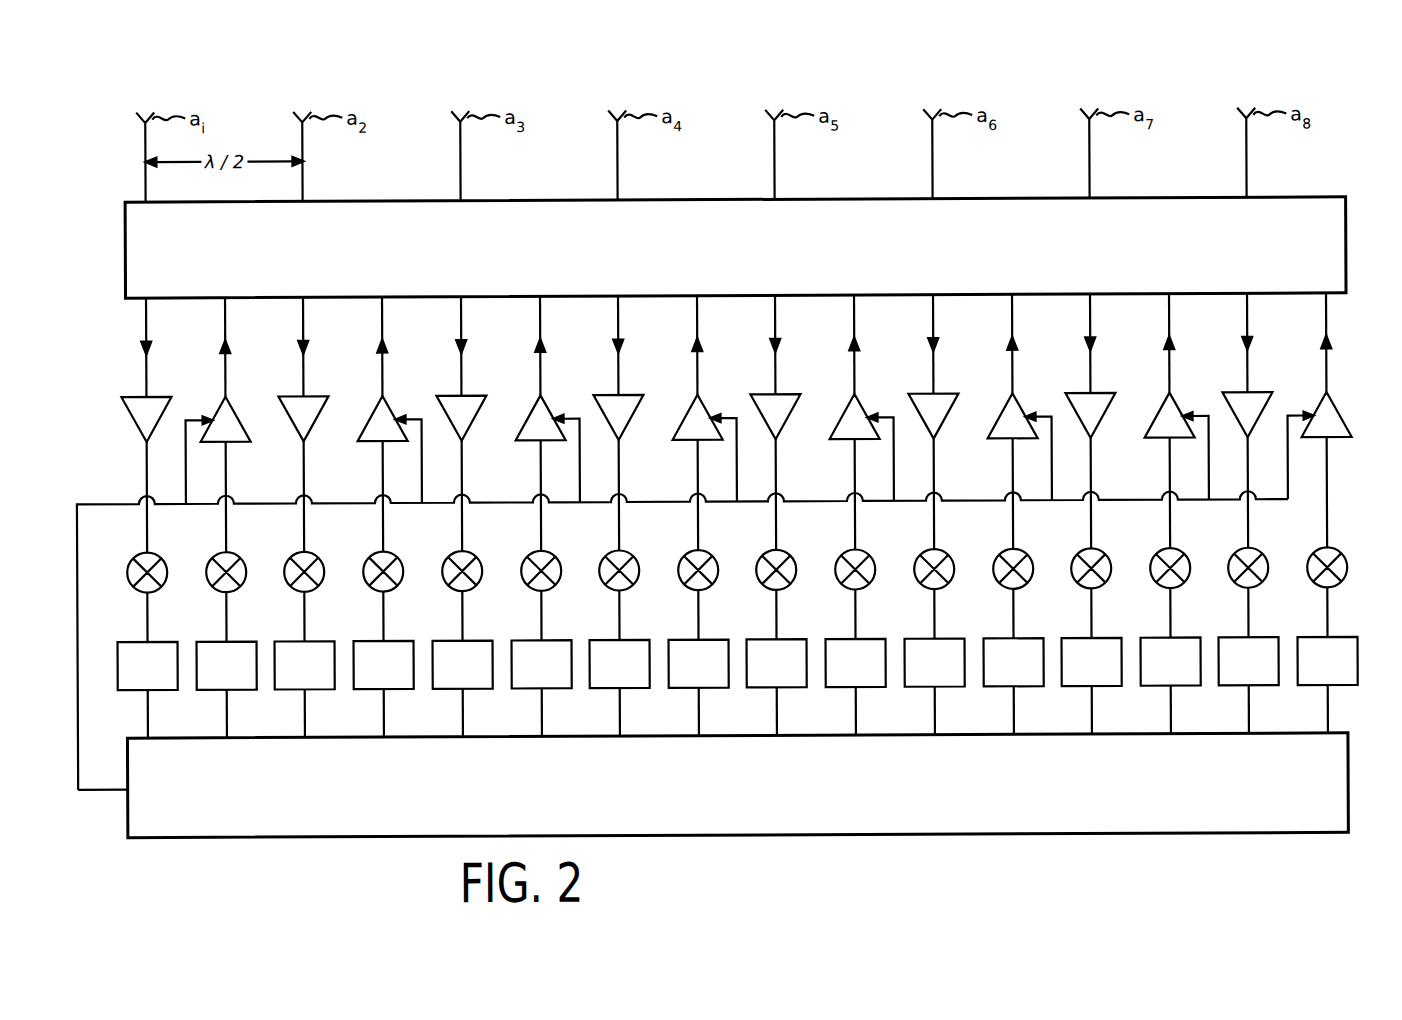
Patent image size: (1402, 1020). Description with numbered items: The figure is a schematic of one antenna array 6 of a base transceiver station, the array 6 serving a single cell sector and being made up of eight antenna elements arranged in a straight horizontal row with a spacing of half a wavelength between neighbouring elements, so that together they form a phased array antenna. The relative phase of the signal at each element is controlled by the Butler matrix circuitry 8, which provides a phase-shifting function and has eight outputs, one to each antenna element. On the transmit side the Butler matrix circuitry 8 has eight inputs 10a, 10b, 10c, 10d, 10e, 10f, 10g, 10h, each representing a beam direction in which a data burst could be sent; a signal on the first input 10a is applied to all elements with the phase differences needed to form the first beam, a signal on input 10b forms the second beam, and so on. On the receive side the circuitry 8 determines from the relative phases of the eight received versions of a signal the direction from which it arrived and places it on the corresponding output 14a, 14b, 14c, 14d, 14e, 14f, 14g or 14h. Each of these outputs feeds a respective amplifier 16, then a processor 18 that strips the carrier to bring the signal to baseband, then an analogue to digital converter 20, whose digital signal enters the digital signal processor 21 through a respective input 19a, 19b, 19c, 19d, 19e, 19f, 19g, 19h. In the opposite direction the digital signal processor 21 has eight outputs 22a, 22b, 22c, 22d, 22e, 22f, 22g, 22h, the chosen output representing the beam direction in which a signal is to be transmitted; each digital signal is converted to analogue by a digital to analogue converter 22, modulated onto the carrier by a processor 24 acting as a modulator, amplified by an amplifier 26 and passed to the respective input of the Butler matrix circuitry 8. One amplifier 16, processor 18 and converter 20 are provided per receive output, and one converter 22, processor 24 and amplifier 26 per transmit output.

The antenna array 6 is at (1222, 90).
The Butler matrix circuitry 8 is at (1293, 199).
The input 10a is at (226, 315).
The input 10b is at (383, 315).
The input 10c is at (541, 315).
The input 10d is at (698, 315).
The input 10e is at (855, 315).
The input 10f is at (1013, 315).
The input 10g is at (1170, 315).
The input 10h is at (1327, 315).
The output 14a is at (147, 315).
The output 14b is at (304, 315).
The output 14c is at (462, 315).
The output 14d is at (619, 315).
The output 14e is at (776, 315).
The output 14f is at (934, 315).
The output 14g is at (1091, 315).
The output 14h is at (1248, 315).
The amplifier 16 is at (1238, 394).
The processor 18 is at (1241, 553).
The input 19a is at (147, 719).
The input 19b is at (304, 719).
The input 19c is at (462, 719).
The input 19d is at (619, 719).
The input 19e is at (776, 719).
The input 19f is at (934, 719).
The input 19g is at (1091, 719).
The input 19h is at (1248, 719).
The analogue to digital converter 20 is at (1236, 639).
The digital signal processor 21 is at (176, 838).
The digital to analogue converter 22 is at (1315, 639).
The output 22a is at (226, 719).
The output 22b is at (383, 719).
The output 22c is at (541, 719).
The output 22d is at (698, 719).
The output 22e is at (855, 719).
The output 22f is at (1013, 719).
The output 22g is at (1170, 719).
The output 22h is at (1327, 719).
The processor 24 is at (1320, 553).
The amplifier 26 is at (1315, 410).